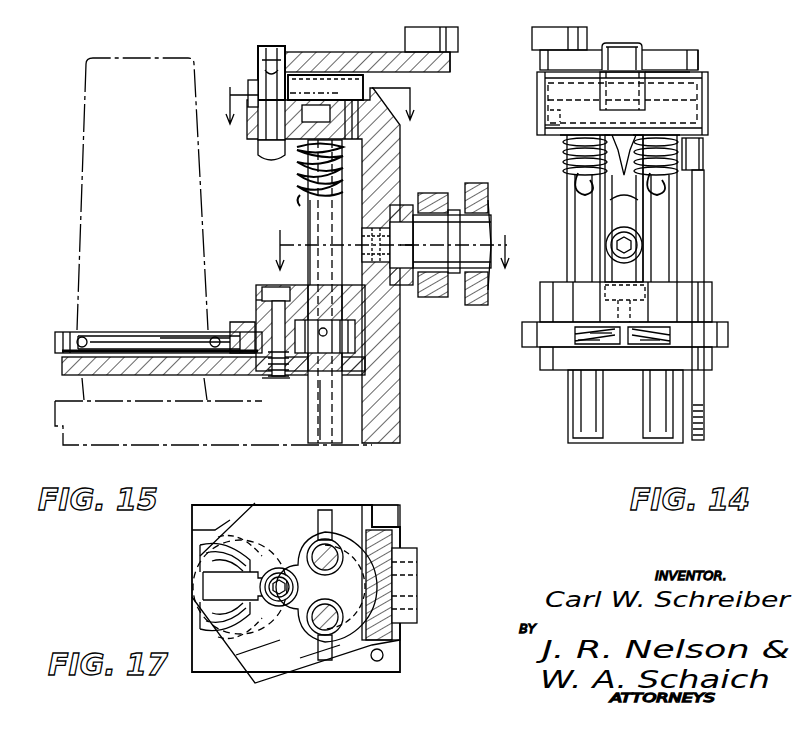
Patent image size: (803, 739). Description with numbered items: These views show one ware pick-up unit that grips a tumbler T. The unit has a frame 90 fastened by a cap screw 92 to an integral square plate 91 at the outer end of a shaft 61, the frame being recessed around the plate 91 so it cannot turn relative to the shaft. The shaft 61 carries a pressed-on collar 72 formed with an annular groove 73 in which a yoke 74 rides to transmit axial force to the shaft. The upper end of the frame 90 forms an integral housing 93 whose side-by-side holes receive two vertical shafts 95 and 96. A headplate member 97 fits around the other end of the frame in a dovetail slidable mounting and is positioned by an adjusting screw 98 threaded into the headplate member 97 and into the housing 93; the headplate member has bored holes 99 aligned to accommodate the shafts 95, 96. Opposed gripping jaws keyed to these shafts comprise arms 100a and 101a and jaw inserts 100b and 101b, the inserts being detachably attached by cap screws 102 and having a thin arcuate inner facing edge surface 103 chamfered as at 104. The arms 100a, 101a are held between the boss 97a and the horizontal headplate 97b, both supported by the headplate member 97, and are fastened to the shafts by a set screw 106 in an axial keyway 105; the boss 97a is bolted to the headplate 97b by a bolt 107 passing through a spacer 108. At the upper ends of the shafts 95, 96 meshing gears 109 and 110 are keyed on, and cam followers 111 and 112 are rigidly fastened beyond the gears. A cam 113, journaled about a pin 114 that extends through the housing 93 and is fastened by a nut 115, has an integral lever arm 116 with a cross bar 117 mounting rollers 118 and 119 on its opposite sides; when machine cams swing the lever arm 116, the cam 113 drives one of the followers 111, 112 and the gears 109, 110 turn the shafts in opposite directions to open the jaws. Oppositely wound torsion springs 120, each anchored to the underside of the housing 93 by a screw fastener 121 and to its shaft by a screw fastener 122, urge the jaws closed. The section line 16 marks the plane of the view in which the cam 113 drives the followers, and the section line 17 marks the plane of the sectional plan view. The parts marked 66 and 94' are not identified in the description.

In FIG. 15, the tumbler T is at (157, 62).
In FIG. 15, the section line 16— 16 is at (327, 92).
In FIG. 15, the section line 17— 17 is at (380, 259).
In FIG. 15, the shaft 61 is at (485, 240).
In FIG. 15, the gear 66 is at (476, 185).
In FIG. 15, the collar 72 is at (454, 212).
In FIG. 15, the groove 73 is at (470, 230).
In FIG. 15, the yoke 74 is at (430, 193).
In FIG. 15, the frame 90 is at (385, 170).
In FIG. 14, the frame 90 is at (625, 428).
In FIG. 17, the frame 90 is at (400, 535).
In FIG. 15, the plate 91 is at (400, 205).
In FIG. 14, the plate 91 is at (612, 215).
In FIG. 17, the plate 91 is at (417, 556).
In FIG. 14, the cap screw 92 is at (606, 238).
In FIG. 15, the housing 93 is at (268, 120).
In FIG. 14, the housing 93 is at (545, 110).
In FIG. 15, the spring 94' is at (299, 170).
In FIG. 14, the shaft 95 is at (660, 236).
In FIG. 17, the shaft 95 is at (310, 660).
In FIG. 15, the shaft 96 is at (308, 226).
In FIG. 14, the shaft 96 is at (575, 215).
In FIG. 17, the shaft 96 is at (333, 548).
In FIG. 15, the headplate member 97 is at (357, 341).
In FIG. 15, the boss 97a is at (268, 290).
In FIG. 14, the boss 97a is at (712, 292).
In FIG. 17, the boss 97a is at (395, 643).
In FIG. 15, the horizontal headplate 97b is at (66, 372).
In FIG. 14, the horizontal headplate 97b is at (547, 362).
In FIG. 17, the horizontal headplate 97b is at (222, 520).
In FIG. 14, the adjusting screw 98 is at (705, 203).
In FIG. 17, the adjusting screw 98 is at (377, 662).
In FIG. 15, the bored holes 99 is at (310, 300).
In FIG. 14, the arm 100a is at (730, 335).
In FIG. 17, the arm 100a is at (258, 644).
In FIG. 14, the jaw insert 100b is at (650, 344).
In FIG. 17, the jaw insert 100b is at (200, 626).
In FIG. 15, the arm 101a is at (408, 378).
In FIG. 14, the arm 101a is at (530, 336).
In FIG. 17, the arm 101a is at (262, 515).
In FIG. 15, the jaw insert 101b is at (170, 338).
In FIG. 14, the jaw insert 101b is at (585, 344).
In FIG. 17, the jaw insert 101b is at (200, 551).
In FIG. 15, the cap screws 102 is at (76, 336).
In FIG. 15, the arcuate inner facing edge surface 103 is at (120, 342).
In FIG. 14, the chamfer 104 is at (577, 333).
In FIG. 17, the chamfer 104 is at (205, 586).
In FIG. 15, the axial keyway 105 is at (325, 412).
In FIG. 14, the axial keyway 105 is at (580, 260).
In FIG. 15, the set screw 106 is at (320, 338).
In FIG. 17, the set screw 106 is at (332, 520).
In FIG. 15, the bolt 107 is at (272, 302).
In FIG. 14, the bolt 107 is at (640, 294).
In FIG. 17, the bolt 107 is at (280, 570).
In FIG. 15, the spacer 108 is at (262, 378).
In FIG. 14, the spacer 108 is at (605, 342).
In FIG. 14, the gear 109 is at (705, 102).
In FIG. 15, the gear 110 is at (352, 112).
In FIG. 14, the gear 110 is at (548, 124).
In FIG. 14, the cam follower 111 is at (705, 85).
In FIG. 15, the cam follower 112 is at (335, 75).
In FIG. 14, the cam follower 112 is at (545, 90).
In FIG. 15, the cam 113 is at (300, 75).
In FIG. 14, the cam 113 is at (700, 48).
In FIG. 15, the pin 114 is at (262, 125).
In FIG. 14, the pin 114 is at (630, 45).
In FIG. 15, the nut 115 is at (266, 162).
In FIG. 14, the nut 115 is at (624, 165).
In FIG. 15, the lever arm 116 is at (375, 52).
In FIG. 14, the lever arm 116 is at (648, 56).
In FIG. 15, the cross bar 117 is at (452, 62).
In FIG. 14, the cross bar 117 is at (690, 47).
In FIG. 14, the roller 118 is at (700, 68).
In FIG. 15, the roller 119 is at (455, 36).
In FIG. 14, the roller 119 is at (587, 28).
In FIG. 15, the torsion springs 120 is at (296, 195).
In FIG. 14, the torsion springs 120 is at (563, 170).
In FIG. 14, the screw fastener 121 is at (565, 145).
In FIG. 14, the screw fastener 122 is at (575, 190).